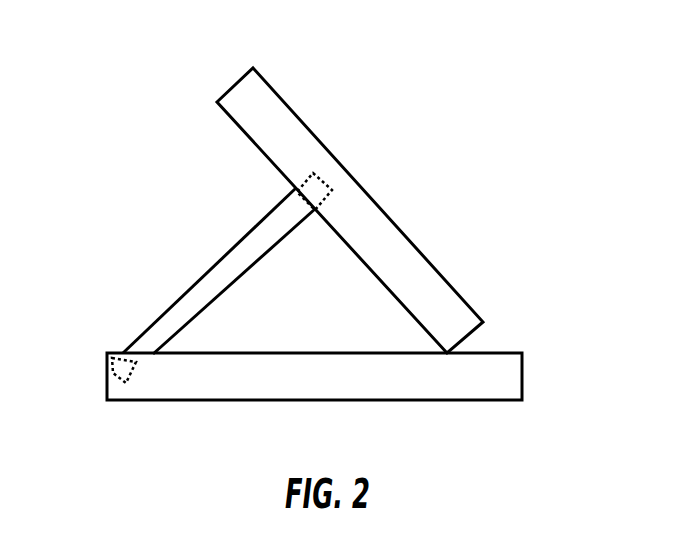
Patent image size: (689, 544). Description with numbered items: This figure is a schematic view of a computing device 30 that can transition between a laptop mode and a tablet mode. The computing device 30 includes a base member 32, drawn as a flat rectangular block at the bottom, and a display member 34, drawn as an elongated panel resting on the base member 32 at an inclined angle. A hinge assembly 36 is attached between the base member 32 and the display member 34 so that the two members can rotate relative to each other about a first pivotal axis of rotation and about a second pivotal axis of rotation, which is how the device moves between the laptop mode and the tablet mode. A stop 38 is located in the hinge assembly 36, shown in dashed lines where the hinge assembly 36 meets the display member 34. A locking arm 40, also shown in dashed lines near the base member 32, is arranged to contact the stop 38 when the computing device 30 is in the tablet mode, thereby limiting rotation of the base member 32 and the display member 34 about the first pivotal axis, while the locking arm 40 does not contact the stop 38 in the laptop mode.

The computing device 30 is at (400, 87).
The base member 32 is at (492, 353).
The display member 34 is at (237, 128).
The hinge assembly 36 is at (207, 272).
The stop 38 is at (148, 365).
The locking arm 40 is at (122, 357).